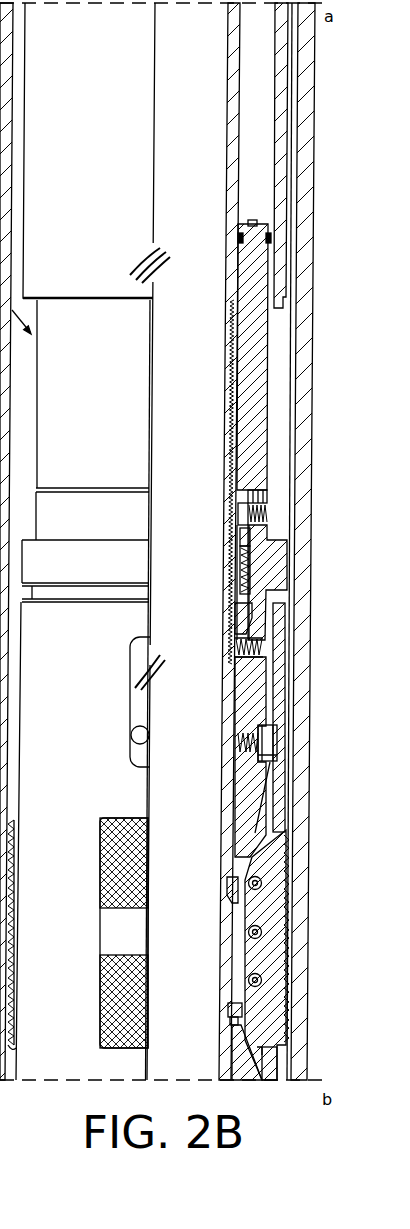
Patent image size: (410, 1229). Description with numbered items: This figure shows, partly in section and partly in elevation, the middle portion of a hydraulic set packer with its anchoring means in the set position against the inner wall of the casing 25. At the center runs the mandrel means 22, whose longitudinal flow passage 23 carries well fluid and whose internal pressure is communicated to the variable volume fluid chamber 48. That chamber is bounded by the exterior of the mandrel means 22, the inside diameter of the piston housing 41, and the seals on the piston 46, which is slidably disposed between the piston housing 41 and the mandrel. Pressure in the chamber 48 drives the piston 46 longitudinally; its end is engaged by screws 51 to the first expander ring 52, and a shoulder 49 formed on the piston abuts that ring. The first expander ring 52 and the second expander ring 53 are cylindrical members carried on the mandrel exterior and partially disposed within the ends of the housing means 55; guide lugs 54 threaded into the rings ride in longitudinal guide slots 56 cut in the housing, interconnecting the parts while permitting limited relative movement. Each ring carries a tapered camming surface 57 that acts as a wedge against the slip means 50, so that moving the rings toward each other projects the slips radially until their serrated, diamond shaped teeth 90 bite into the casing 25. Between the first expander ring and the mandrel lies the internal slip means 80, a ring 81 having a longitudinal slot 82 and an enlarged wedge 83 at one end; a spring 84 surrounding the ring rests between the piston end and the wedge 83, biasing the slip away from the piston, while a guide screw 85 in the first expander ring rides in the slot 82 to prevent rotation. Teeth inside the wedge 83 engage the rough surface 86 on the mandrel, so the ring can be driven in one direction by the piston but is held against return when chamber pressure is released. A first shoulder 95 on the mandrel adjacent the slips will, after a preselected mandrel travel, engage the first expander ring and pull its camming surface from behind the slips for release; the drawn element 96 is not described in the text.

The mandrel means 22 is at (233, 142).
The longitudinal flow passage 23 is at (190, 360).
The casing 25 is at (305, 459).
The piston housing 41 is at (280, 181).
The piston 46 is at (250, 370).
The variable volume fluid chamber 48 is at (268, 51).
The shoulder 49 is at (260, 492).
The slip means 50 is at (276, 893).
The screws 51 is at (236, 515).
The first expander ring 52 is at (250, 678).
The second expander ring 53 is at (245, 1068).
The guide lugs 54 is at (270, 740).
The housing means 55 is at (272, 790).
The guide slots 56 is at (130, 688).
The tapered camming surface 57 is at (262, 806).
The internal slip means 80 is at (200, 535).
The ring 81 is at (236, 558).
The longitudinal slot 82 is at (233, 580).
The wedge 83 is at (238, 619).
The spring 84 is at (245, 566).
The guide screw 85 is at (265, 642).
The rough surface 86 is at (243, 352).
The serrated diamond shaped teeth 90 is at (100, 990).
The first shoulder 95 is at (224, 862).
The spring 96 is at (233, 728).